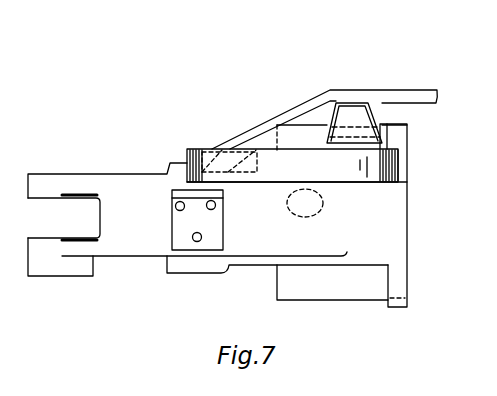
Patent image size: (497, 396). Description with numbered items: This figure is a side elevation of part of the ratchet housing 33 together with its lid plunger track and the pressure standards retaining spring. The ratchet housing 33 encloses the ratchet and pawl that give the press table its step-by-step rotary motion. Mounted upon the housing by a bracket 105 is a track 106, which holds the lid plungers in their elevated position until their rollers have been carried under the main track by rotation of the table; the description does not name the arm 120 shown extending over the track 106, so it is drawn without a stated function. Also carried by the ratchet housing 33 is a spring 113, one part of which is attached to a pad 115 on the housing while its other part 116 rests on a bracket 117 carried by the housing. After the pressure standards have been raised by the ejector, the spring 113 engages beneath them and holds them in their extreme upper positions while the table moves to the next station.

The ratchet housing 33 is at (135, 250).
The bracket 105 is at (343, 107).
The track 106 is at (292, 132).
The spring 113 is at (356, 177).
The pad 115 is at (306, 170).
The part 116 is at (211, 152).
The bracket 117 is at (183, 237).
The lever arm 120 is at (405, 95).